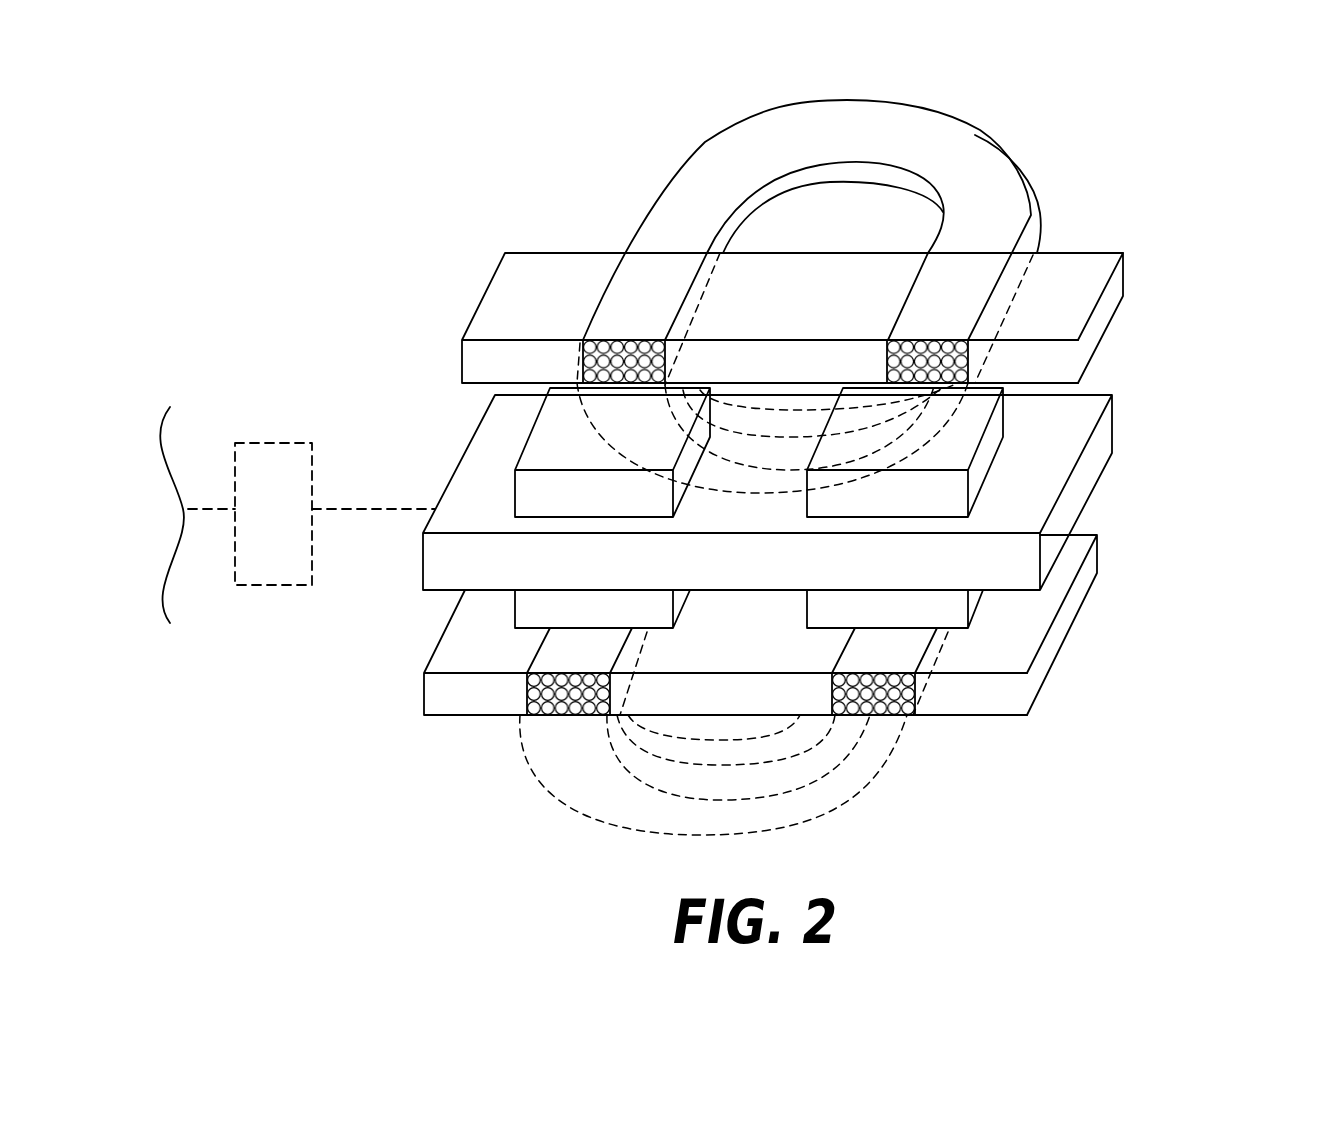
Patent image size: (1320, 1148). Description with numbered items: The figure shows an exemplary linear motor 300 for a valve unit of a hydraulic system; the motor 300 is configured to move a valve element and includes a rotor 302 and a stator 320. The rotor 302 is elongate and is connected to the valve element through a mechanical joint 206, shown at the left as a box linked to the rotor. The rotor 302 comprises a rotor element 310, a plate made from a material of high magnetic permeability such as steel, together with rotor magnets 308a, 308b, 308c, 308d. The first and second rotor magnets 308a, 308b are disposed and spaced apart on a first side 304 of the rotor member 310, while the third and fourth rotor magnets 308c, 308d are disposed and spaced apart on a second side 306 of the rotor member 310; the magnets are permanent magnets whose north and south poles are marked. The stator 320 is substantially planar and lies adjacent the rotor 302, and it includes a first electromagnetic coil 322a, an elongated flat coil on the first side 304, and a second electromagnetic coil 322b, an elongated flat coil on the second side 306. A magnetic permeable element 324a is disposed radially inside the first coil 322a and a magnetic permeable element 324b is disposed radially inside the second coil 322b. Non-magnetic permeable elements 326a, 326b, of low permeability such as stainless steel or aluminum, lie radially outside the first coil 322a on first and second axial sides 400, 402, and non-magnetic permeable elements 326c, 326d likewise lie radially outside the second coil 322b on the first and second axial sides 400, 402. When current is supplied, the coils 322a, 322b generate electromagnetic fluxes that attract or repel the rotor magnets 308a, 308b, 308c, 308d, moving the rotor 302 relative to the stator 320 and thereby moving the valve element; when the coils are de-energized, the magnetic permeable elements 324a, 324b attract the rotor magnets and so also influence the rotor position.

The linear motor 300 is at (597, 147).
The mechanical joint 206 is at (253, 463).
The first axial side 400 is at (374, 343).
The first side 304 is at (419, 393).
The non-magnetic permeable element 326a is at (527, 280).
The non-magnetic permeable element 326b is at (1077, 290).
The stator 320 is at (1067, 185).
The first electromagnetic coil 322a is at (977, 142).
The second electromagnetic coil 322b is at (907, 653).
The magnetic permeable element 324a is at (772, 267).
The magnetic permeable element 324b is at (667, 695).
The rotor 302 is at (1105, 498).
The second axial side 402 is at (1251, 405).
The rotor element 310 is at (1076, 428).
The first rotor magnet 308a is at (550, 443).
The second rotor magnet 308b is at (985, 410).
The third rotor magnet 308c is at (550, 617).
The fourth rotor magnet 308d is at (965, 618).
The second side 306 is at (399, 675).
The non-magnetic permeable element 326c is at (468, 695).
The non-magnetic permeable element 326d is at (1017, 652).